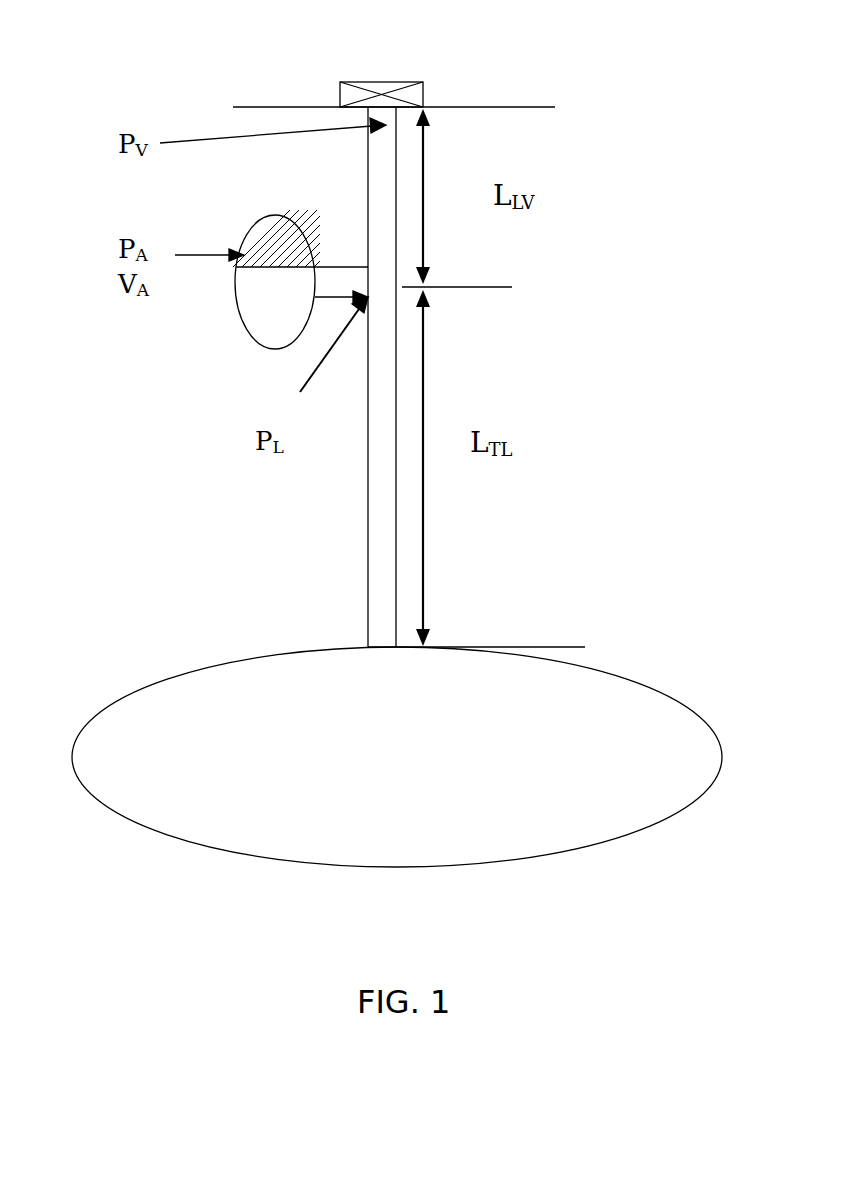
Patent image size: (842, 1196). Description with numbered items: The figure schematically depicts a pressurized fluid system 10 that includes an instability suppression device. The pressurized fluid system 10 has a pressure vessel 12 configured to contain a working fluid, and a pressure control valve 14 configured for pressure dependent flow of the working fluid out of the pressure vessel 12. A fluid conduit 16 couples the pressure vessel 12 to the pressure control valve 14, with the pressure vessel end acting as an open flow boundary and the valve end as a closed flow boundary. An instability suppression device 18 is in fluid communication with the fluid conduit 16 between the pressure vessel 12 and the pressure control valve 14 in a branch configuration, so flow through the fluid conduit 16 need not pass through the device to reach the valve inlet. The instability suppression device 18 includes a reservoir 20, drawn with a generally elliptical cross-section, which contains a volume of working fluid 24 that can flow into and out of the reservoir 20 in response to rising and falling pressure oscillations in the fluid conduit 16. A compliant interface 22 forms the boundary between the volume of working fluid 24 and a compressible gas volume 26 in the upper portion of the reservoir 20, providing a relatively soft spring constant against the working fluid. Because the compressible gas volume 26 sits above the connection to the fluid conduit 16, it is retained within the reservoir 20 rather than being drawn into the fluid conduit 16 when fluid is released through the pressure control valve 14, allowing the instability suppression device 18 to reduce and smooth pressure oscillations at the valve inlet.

The pressurized fluid system 10 is at (118, 40).
The pressure vessel 12 is at (72, 760).
The pressure control valve 14 is at (388, 82).
The fluid conduit 16 is at (368, 508).
The instability suppression device 18 is at (265, 302).
The reservoir 20 is at (233, 290).
The compliant interface 22 is at (277, 262).
The volume of working fluid 24 is at (277, 341).
The compressible gas volume 26 is at (265, 228).